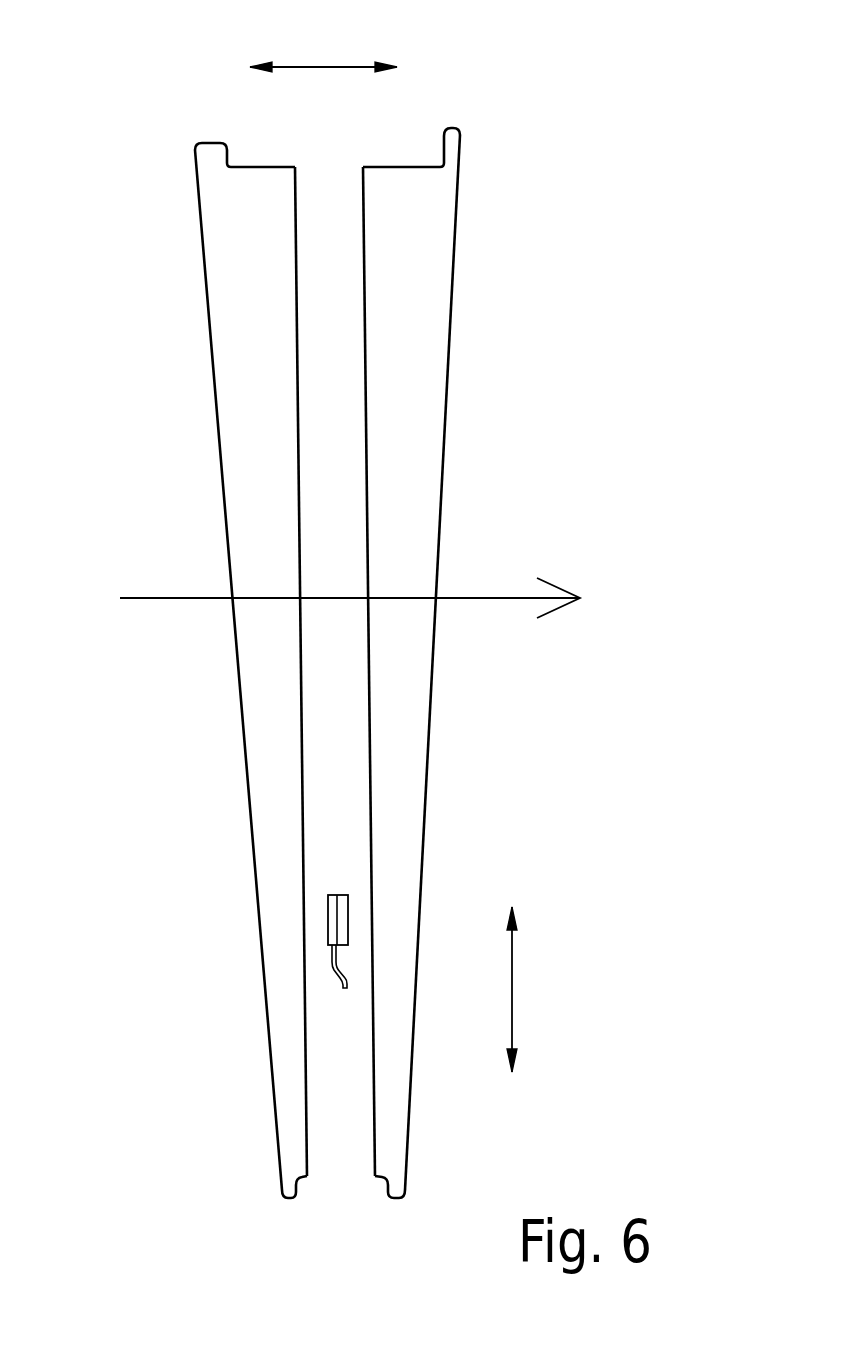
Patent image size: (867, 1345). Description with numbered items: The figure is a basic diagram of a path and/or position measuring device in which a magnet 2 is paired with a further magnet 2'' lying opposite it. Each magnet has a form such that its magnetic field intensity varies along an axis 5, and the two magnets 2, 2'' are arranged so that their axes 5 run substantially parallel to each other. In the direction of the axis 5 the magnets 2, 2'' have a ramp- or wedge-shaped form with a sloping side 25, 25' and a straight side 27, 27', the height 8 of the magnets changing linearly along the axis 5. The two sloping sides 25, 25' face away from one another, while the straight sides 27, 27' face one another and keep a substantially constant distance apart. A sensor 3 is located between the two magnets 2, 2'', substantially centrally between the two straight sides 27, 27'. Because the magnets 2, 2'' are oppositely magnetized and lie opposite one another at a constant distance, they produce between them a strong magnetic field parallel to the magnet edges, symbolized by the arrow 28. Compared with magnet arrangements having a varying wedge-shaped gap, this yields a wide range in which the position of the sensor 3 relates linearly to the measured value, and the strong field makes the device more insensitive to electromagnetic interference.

The magnet 2 is at (194, 619).
The further magnet 2'' is at (464, 613).
The height of the magnets 8 is at (323, 65).
The arrow 28 is at (485, 598).
The sloping side 25 is at (194, 670).
The sloping side 25' is at (485, 662).
The straight side 27 is at (218, 671).
The straight side 27' is at (458, 671).
The sensor 3 is at (337, 925).
The axis 5 is at (512, 970).